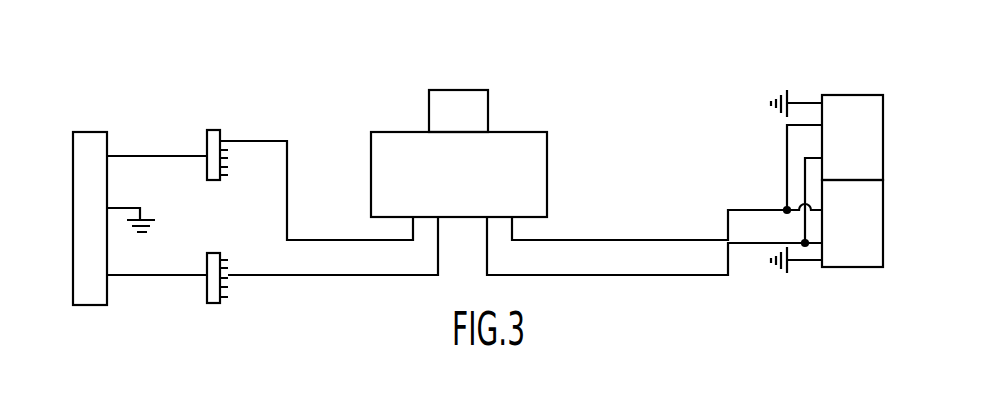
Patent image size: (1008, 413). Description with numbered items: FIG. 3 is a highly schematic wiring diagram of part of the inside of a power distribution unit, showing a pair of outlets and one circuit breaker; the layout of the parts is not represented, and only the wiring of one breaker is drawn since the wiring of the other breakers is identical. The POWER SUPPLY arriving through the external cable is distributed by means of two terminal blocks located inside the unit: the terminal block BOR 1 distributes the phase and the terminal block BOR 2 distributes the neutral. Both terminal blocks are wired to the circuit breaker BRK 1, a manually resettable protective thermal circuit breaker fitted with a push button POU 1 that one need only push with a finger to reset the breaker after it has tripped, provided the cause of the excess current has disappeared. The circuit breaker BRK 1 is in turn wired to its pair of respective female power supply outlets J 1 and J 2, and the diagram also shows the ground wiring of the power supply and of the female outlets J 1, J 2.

The power supply POWER SUPPLY is at (86, 137).
The terminal block BOR 1 is at (211, 130).
The terminal block BOR 2 is at (212, 253).
The circuit breaker BRK 1 is at (547, 148).
The push button POU 1 is at (458, 102).
The female outlet J 1 is at (872, 223).
The female outlet J 2 is at (872, 137).